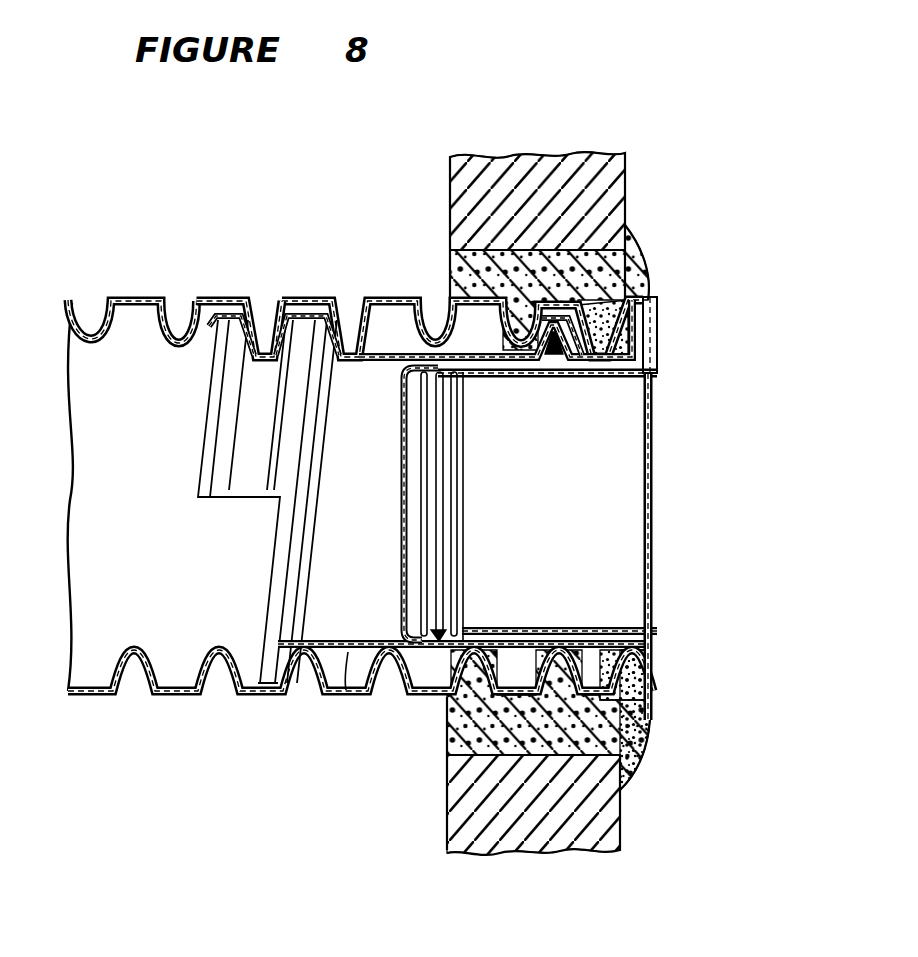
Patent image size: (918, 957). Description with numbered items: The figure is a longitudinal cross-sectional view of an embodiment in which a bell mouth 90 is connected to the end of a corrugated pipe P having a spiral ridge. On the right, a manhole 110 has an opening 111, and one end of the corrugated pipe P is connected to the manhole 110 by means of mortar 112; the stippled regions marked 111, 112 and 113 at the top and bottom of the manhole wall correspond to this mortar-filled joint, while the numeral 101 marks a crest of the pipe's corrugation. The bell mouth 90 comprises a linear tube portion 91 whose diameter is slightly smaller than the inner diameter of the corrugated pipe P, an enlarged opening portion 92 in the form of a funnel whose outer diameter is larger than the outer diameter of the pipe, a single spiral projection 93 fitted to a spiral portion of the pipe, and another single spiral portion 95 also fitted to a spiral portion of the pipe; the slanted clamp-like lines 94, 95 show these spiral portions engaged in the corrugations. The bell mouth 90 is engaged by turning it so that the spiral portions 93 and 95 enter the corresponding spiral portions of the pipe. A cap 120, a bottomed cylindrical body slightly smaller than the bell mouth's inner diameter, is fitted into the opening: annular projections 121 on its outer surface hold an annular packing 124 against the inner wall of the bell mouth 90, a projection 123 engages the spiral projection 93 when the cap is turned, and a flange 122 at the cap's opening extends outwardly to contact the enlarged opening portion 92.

The corrugated pipe P is at (132, 293).
The pipe corrugation crest 101 is at (216, 305).
The bell mouth 90 is at (373, 343).
The linear tube portion 91 is at (345, 693).
The enlarged opening portion 92 is at (645, 342).
The spiral projection 93 is at (610, 657).
The clamp band 94 is at (217, 345).
The spiral portion 95 is at (322, 357).
The manhole 110 is at (575, 188).
The opening 111 is at (466, 733).
The mortar 112 is at (456, 283).
The seal lip 113 is at (640, 745).
The cap 120 is at (664, 541).
The annular projections 121 is at (458, 373).
The flange 122 is at (657, 356).
The projection 123 is at (566, 378).
The annular packing 124 is at (440, 631).